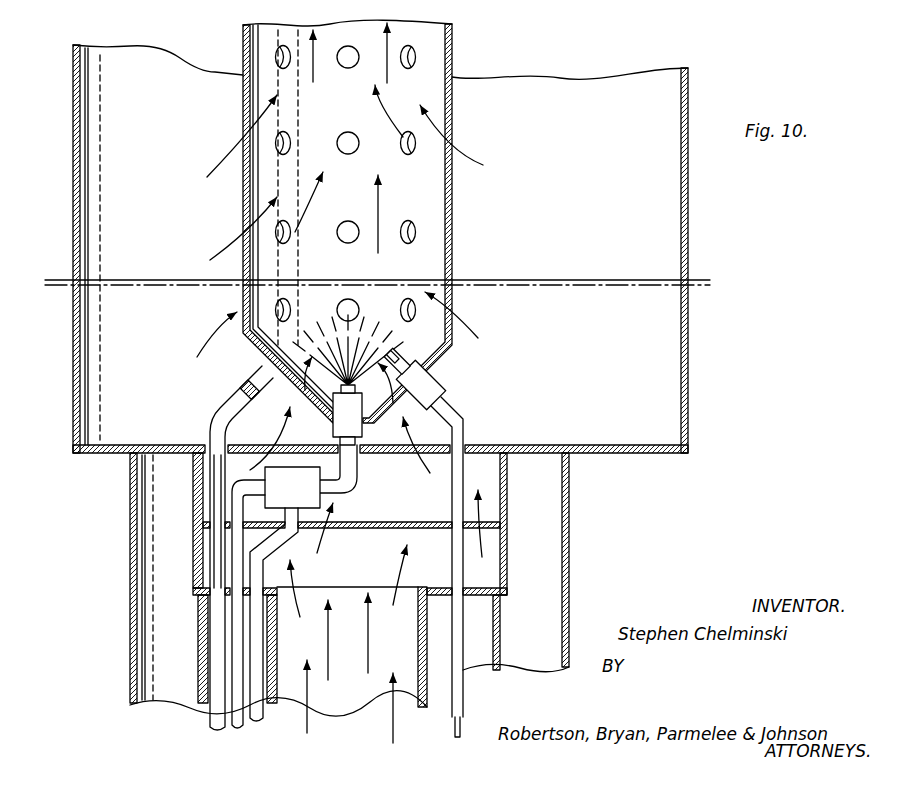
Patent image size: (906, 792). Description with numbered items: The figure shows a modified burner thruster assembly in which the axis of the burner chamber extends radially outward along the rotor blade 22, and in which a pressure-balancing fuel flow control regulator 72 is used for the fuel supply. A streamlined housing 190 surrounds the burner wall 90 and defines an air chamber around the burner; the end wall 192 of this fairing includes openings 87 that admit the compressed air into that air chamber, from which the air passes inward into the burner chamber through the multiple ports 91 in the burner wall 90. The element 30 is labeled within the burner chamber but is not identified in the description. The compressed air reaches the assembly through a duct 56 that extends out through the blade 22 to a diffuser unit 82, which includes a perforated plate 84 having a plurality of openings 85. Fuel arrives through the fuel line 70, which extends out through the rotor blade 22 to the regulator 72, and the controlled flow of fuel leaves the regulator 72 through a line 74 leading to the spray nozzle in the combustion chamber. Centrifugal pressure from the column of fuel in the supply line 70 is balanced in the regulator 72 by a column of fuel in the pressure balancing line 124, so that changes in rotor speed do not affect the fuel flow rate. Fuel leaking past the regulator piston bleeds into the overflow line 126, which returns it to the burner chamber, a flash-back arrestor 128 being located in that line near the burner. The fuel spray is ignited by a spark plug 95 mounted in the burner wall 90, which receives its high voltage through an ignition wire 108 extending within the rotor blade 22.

The streamlined housing 190 is at (73, 193).
The end wall 192 is at (655, 455).
The burner wall 90 is at (452, 107).
The perforated tube 30 is at (350, 109).
The openings 91 is at (243, 136).
The spark plug 95 is at (427, 388).
The ignition wire 108 is at (463, 425).
The line 74 is at (352, 470).
The pressure-balancing fuel flow control regulator 72 is at (322, 508).
The fuel line 70 is at (257, 720).
The pressure balancing line 124 is at (218, 726).
The overflow line 126 is at (217, 500).
The flash-back arrestor 128 is at (240, 392).
The openings 87 is at (262, 438).
The openings 85 is at (433, 522).
The perforated plate 84 is at (357, 530).
The diffuser unit 82 is at (507, 490).
The duct 56 is at (423, 643).
The rotor blade 22 is at (130, 618).